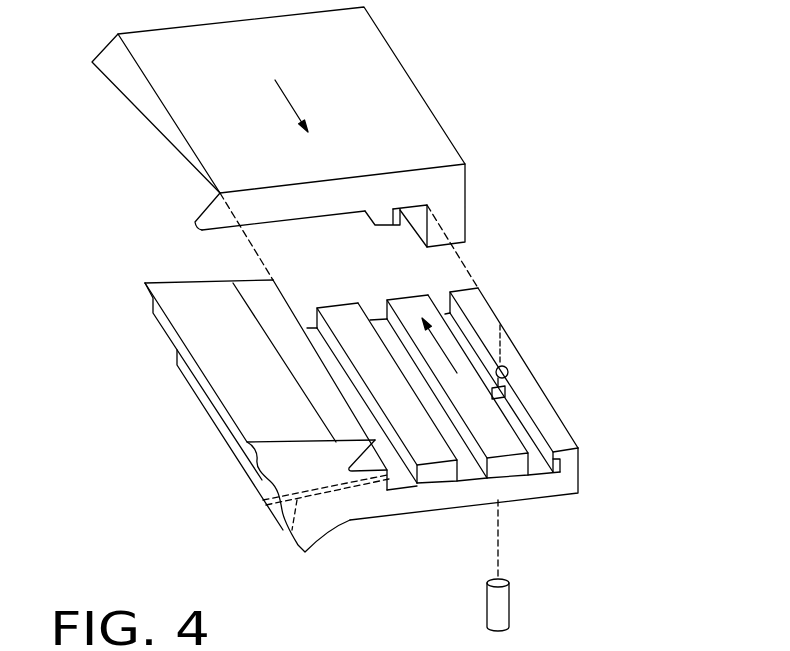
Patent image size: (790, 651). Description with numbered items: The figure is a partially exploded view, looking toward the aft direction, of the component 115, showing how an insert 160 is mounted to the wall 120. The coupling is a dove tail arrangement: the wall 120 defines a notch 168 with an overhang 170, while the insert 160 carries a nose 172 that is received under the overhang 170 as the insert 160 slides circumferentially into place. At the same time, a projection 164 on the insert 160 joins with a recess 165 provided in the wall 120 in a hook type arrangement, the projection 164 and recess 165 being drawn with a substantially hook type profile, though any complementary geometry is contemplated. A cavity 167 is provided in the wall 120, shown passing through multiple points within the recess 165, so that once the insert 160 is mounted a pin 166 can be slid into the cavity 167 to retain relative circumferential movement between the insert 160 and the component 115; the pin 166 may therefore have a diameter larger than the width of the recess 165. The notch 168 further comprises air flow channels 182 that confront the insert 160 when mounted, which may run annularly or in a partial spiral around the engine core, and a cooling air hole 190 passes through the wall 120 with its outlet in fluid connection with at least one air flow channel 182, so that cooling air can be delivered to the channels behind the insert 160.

The component 115 is at (112, 170).
The wall 120 is at (375, 438).
The insert 160 is at (386, 147).
The projection 164 is at (383, 221).
The recess 165 is at (555, 470).
The pin 166 is at (502, 604).
The cavity 167 is at (503, 366).
The notch 168 is at (490, 293).
The overhang 170 is at (262, 291).
The nose 172 is at (112, 62).
The air flow channel 182 is at (402, 480).
The cooling air hole 190 is at (287, 537).